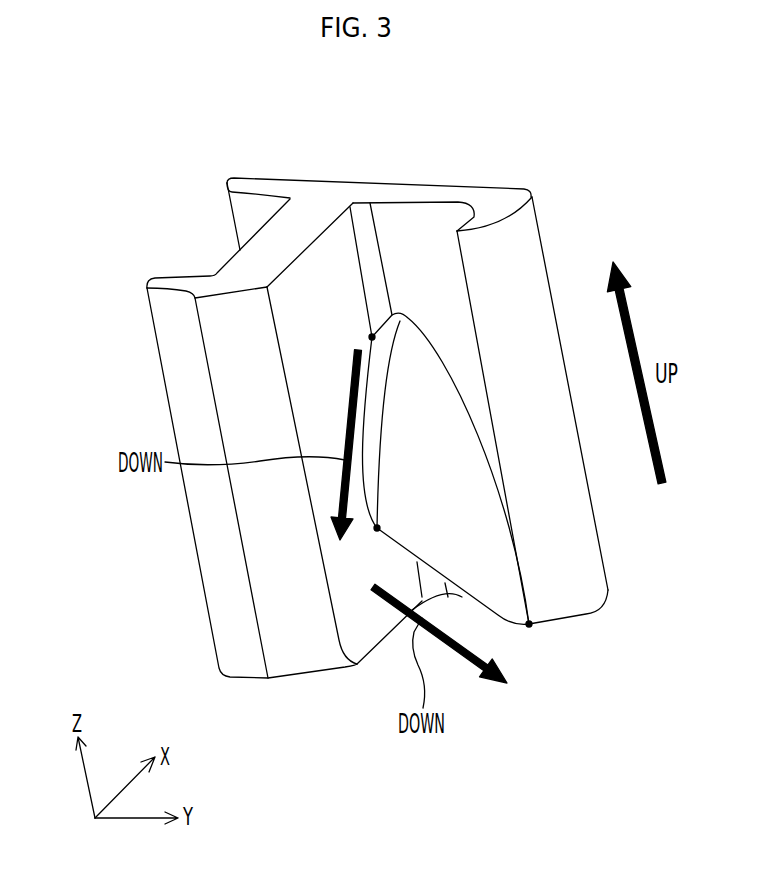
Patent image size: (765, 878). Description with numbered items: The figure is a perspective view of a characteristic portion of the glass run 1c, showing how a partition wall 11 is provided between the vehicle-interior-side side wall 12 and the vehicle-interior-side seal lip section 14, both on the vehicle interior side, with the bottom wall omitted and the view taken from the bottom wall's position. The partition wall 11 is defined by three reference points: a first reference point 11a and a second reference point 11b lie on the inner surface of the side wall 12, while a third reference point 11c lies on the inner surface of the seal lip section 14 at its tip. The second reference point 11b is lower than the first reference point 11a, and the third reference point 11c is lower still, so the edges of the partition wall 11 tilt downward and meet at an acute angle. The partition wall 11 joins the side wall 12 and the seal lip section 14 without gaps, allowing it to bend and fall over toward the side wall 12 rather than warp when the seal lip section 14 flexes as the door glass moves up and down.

The glass run 1c is at (590, 121).
The partition wall 11 is at (480, 503).
The first reference point 11a is at (372, 337).
The second reference point 11b is at (377, 528).
The third reference point 11c is at (529, 624).
The vehicle-interior-side side wall 12 is at (300, 295).
The vehicle-interior-side seal lip section 14 is at (545, 303).